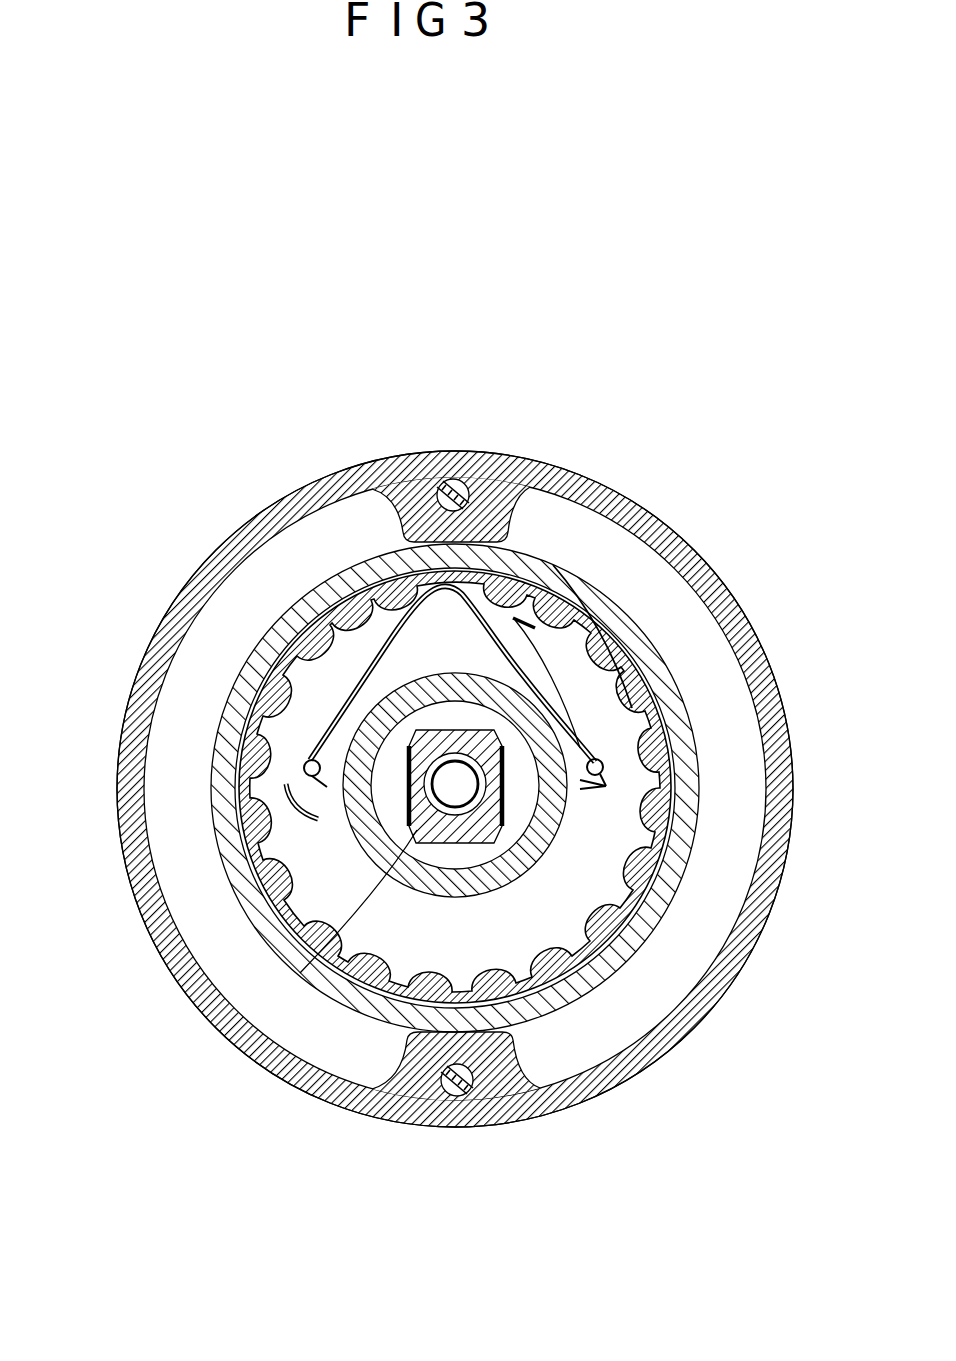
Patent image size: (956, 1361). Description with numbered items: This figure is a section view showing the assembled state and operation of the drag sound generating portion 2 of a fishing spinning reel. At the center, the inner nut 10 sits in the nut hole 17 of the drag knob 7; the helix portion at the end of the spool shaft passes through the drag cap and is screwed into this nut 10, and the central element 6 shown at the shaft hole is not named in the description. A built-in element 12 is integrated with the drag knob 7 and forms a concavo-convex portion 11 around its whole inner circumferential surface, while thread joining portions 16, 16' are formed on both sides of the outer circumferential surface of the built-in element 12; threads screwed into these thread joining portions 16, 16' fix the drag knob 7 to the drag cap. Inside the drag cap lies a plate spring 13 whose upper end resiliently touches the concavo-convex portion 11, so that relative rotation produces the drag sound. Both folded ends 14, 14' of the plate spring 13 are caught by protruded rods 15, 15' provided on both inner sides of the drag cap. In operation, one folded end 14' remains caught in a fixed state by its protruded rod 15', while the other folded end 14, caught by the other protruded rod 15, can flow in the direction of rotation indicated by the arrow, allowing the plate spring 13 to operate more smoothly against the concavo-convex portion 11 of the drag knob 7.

The drag sound generating portion 2 is at (674, 472).
The shaft 6 is at (430, 847).
The drag knob 7 is at (712, 568).
The inner nut 10 is at (485, 845).
The concavo-convex portion 11 is at (672, 782).
The built-in element 12 is at (392, 522).
The plate spring 13 is at (341, 699).
The folded end 14 is at (182, 844).
The folded end 14' is at (716, 860).
The protruded rod 15 is at (183, 797).
The protruded rod 15' is at (703, 682).
The thread joining portion 16 is at (451, 433).
The thread joining portion 16' is at (460, 1136).
The nut hole 17 is at (410, 792).